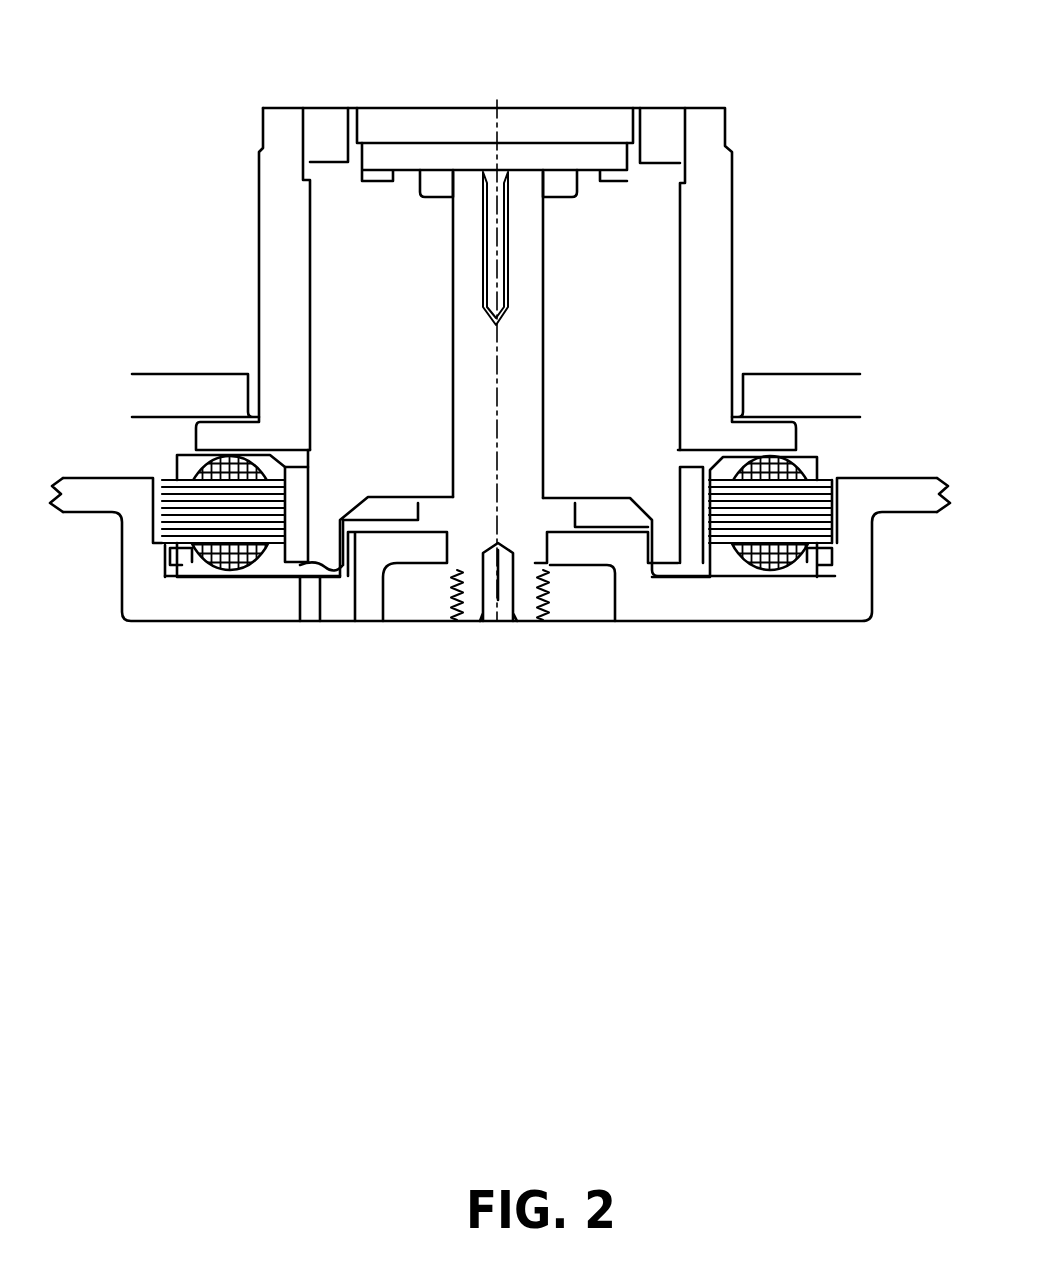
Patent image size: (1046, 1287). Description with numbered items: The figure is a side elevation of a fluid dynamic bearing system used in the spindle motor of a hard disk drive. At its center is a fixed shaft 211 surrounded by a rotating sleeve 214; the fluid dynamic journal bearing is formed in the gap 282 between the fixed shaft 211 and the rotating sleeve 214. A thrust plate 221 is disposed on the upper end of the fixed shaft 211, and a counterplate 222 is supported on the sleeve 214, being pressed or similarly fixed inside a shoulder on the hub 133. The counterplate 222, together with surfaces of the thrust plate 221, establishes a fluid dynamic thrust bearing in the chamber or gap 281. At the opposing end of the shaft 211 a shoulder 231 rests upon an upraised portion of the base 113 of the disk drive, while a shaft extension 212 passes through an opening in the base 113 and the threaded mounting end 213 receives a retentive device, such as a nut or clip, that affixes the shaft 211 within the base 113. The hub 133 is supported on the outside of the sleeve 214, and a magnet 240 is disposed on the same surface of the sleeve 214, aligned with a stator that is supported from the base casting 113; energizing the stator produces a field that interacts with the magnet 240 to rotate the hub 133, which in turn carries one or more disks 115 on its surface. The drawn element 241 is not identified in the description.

The base 113 is at (632, 585).
The disks 115 is at (832, 398).
The hub 133 is at (713, 212).
The fixed shaft 211 is at (527, 405).
The shaft extension 212 is at (473, 543).
The threaded mounting end 213 is at (458, 572).
The rotating sleeve 214 is at (646, 317).
The thrust plate 221 is at (562, 182).
The counterplate 222 is at (590, 157).
The shoulder 231 is at (553, 513).
The magnet 240 is at (690, 528).
The coil winding 241 is at (820, 527).
The gap 281 is at (402, 167).
The gap 282 is at (452, 318).